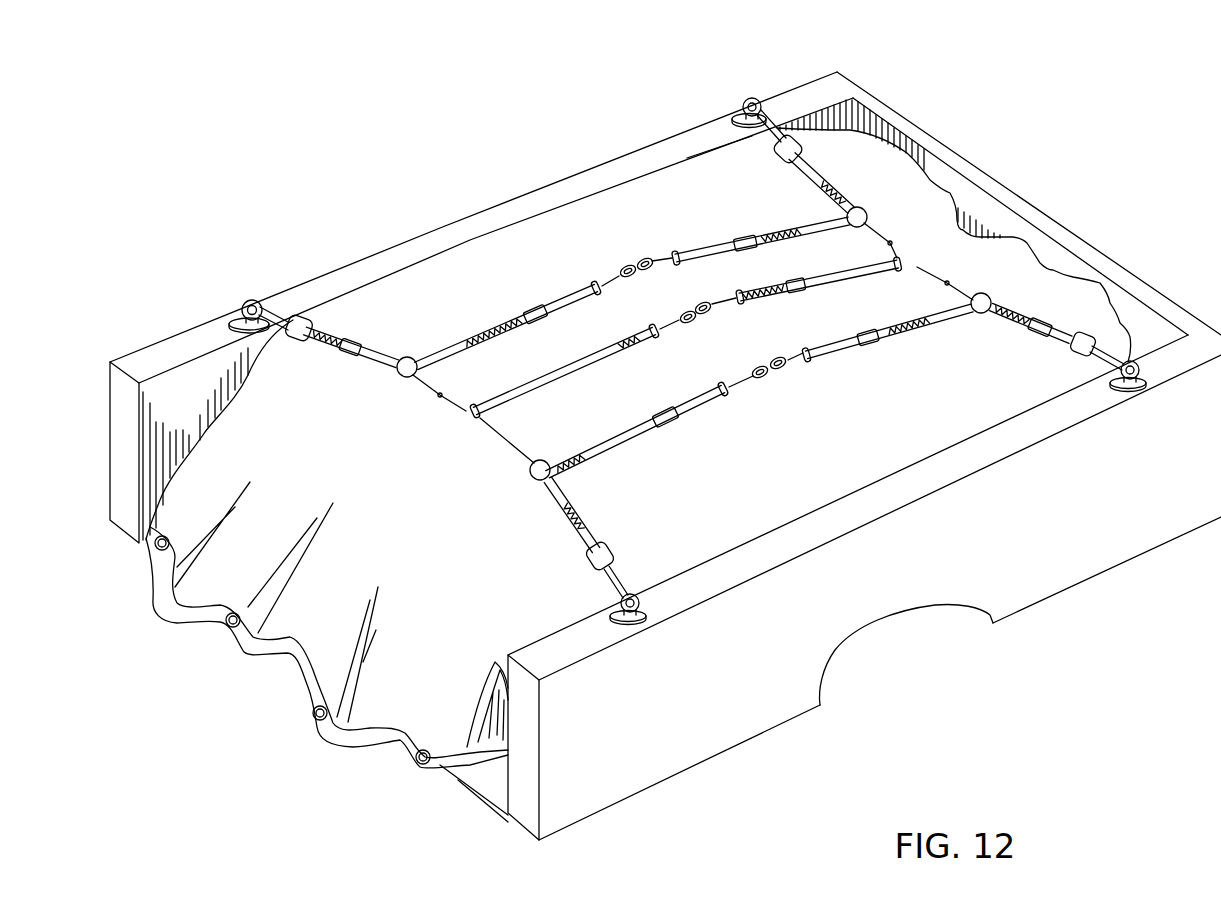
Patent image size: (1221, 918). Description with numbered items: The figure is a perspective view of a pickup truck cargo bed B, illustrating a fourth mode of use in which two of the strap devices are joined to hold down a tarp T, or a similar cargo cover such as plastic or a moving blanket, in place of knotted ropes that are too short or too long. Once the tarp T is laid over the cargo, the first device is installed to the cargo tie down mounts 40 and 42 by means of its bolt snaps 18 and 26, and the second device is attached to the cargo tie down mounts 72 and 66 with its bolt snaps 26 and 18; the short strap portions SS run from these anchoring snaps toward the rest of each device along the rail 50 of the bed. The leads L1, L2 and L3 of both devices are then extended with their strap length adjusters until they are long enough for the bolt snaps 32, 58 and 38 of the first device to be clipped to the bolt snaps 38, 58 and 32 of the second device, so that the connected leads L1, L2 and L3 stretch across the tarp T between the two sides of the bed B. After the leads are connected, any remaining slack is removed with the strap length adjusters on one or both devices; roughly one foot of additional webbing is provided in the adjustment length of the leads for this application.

The bolt snap 18 is at (770, 103).
The bolt snap 26 is at (264, 295).
The bolt snap 32 is at (652, 258).
The bolt snap 38 is at (618, 272).
The cargo tie down mount 40 is at (737, 117).
The cargo tie down mount 42 is at (1140, 388).
The truck bed side rail 50 is at (580, 180).
The bolt snap 58 is at (717, 310).
The cargo tie down mount 66 is at (630, 617).
The cargo tie down mount 72 is at (241, 322).
The short strap SS is at (377, 353).
The lead L1 is at (778, 222).
The lead L2 is at (477, 338).
The lead L3 is at (875, 262).
The tarp T is at (335, 607).
The cargo bed B is at (492, 783).